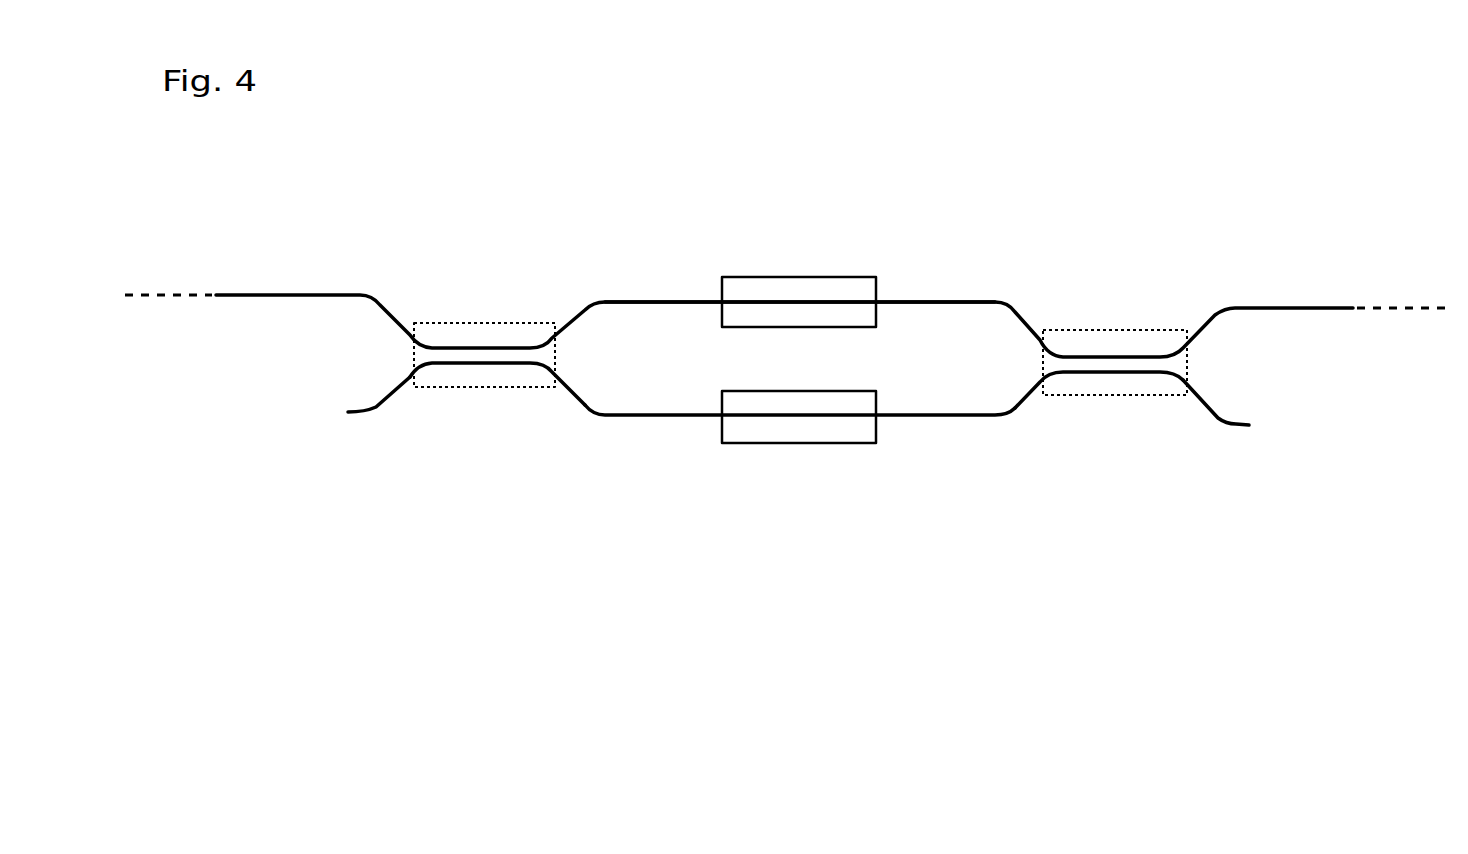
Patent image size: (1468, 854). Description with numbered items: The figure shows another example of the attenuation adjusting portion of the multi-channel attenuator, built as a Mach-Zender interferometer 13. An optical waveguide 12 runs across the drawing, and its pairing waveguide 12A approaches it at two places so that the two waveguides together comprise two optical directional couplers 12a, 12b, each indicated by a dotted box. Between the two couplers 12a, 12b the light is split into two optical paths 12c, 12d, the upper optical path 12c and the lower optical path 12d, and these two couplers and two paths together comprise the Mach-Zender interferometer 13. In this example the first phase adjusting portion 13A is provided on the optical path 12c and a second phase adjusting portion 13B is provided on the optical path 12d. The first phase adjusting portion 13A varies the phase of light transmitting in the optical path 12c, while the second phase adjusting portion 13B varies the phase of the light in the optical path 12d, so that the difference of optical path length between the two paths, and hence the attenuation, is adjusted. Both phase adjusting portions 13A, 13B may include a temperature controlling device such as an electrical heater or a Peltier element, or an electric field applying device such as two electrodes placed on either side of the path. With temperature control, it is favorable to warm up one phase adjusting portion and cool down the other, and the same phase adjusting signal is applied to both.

The optical waveguide 12 is at (313, 294).
The pairing waveguide 12A is at (388, 403).
The optical directional coupler 12a is at (477, 389).
The optical directional coupler 12b is at (1122, 397).
The optical path 12c is at (965, 302).
The optical path 12d is at (957, 423).
The Mach-Zender interferometer 13 is at (972, 214).
The first phase adjusting portion 13A is at (805, 277).
The second phase adjusting portion 13B is at (812, 443).